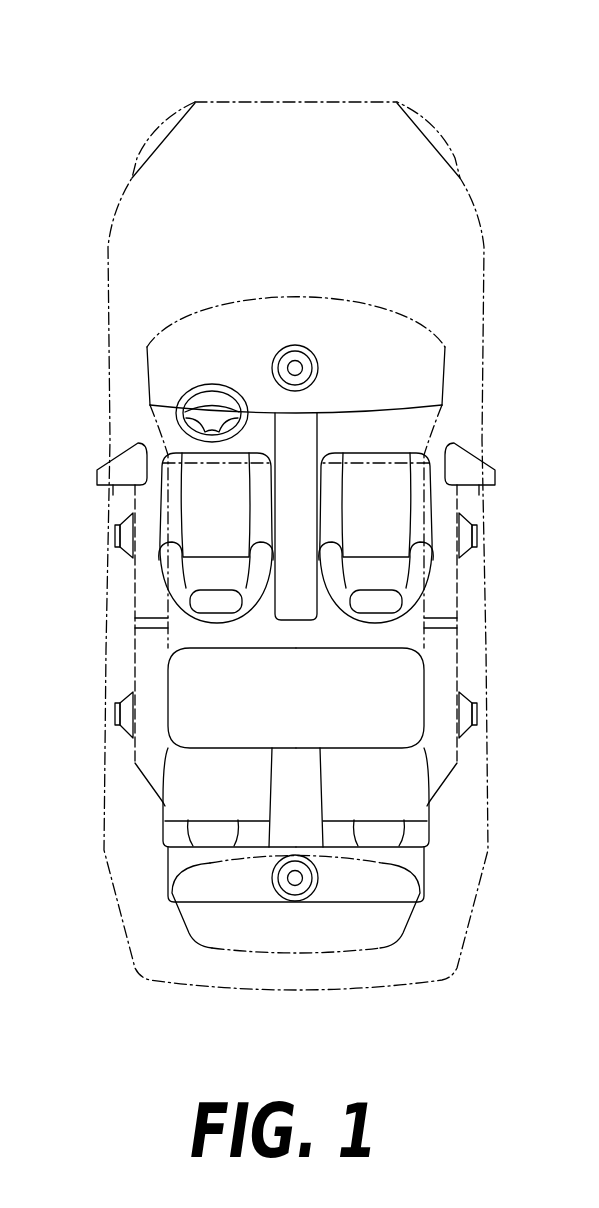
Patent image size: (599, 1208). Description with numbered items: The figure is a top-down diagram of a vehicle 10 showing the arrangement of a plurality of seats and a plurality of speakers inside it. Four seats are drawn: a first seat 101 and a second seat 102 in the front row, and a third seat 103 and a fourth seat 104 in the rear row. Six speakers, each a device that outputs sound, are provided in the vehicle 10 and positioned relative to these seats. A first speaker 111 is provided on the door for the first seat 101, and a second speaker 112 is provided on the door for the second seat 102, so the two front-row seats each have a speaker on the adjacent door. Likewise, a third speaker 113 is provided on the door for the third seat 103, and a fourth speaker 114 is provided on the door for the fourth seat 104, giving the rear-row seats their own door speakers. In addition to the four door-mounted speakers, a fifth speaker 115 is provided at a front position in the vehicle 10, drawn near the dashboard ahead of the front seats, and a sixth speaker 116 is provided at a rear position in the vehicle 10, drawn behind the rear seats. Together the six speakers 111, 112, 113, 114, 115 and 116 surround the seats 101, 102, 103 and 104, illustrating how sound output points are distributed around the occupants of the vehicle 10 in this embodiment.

The vehicle 10 is at (417, 98).
The first seat 101 is at (163, 570).
The second seat 102 is at (430, 569).
The third seat 103 is at (165, 810).
The fourth seat 104 is at (427, 808).
The first speaker 111 is at (115, 537).
The second speaker 112 is at (478, 537).
The third speaker 113 is at (115, 718).
The fourth speaker 114 is at (478, 718).
The fifth speaker 115 is at (320, 367).
The sixth speaker 116 is at (300, 901).